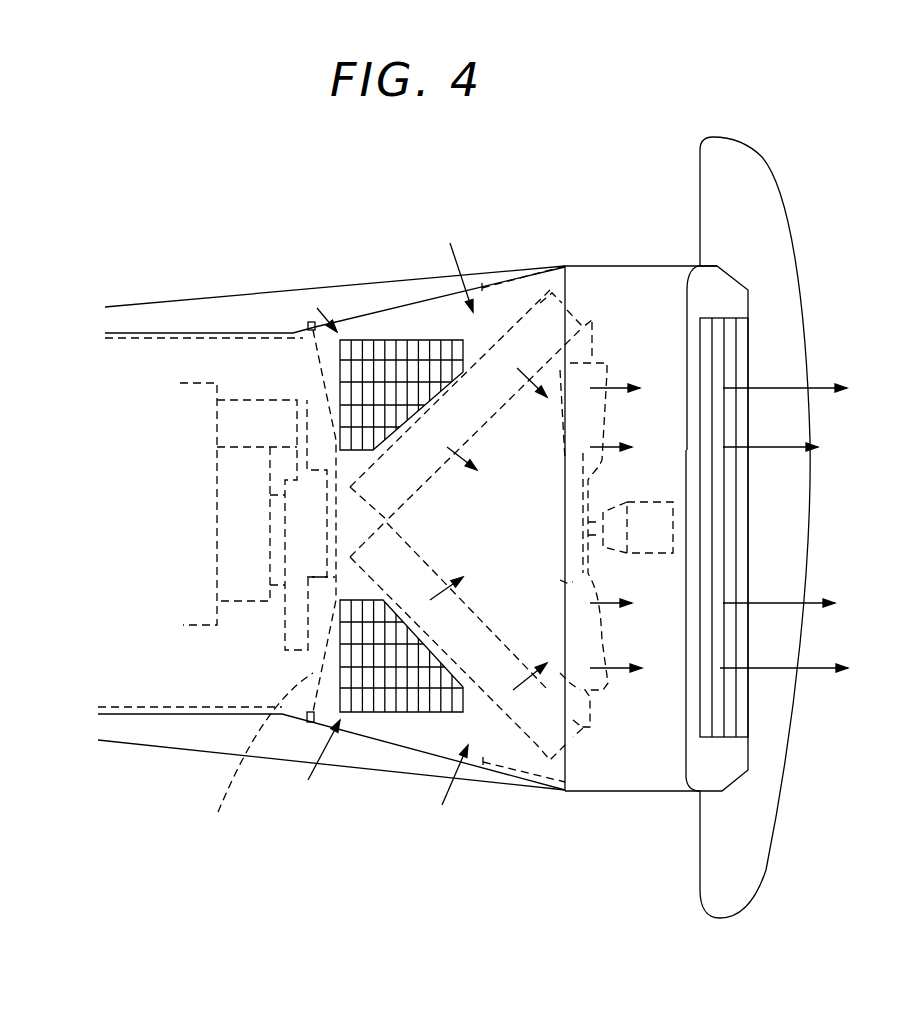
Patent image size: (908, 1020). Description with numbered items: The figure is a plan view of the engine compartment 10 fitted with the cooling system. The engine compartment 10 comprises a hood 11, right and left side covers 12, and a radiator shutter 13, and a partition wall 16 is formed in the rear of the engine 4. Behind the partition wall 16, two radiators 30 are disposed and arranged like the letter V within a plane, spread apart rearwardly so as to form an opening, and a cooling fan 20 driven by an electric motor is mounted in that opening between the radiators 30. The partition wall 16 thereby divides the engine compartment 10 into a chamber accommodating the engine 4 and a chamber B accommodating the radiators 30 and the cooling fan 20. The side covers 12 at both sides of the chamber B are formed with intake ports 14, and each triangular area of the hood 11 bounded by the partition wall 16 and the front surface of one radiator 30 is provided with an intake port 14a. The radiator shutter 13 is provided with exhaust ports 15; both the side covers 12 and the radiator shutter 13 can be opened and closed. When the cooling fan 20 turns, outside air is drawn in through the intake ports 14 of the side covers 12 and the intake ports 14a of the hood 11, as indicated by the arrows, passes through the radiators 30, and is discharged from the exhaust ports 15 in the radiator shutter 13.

The engine compartment 10 is at (140, 345).
The hood 11 is at (253, 365).
The intake port 14 is at (407, 313).
The intake port 14a is at (347, 390).
The engine 4 is at (237, 507).
The side cover 12 is at (520, 277).
The radiator 30 is at (563, 266).
The cooling fan 20 is at (607, 375).
The exhaust port 15 is at (730, 523).
The radiator shutter 13 is at (630, 792).
The partition wall 16 is at (260, 759).
The chamber B is at (447, 322).